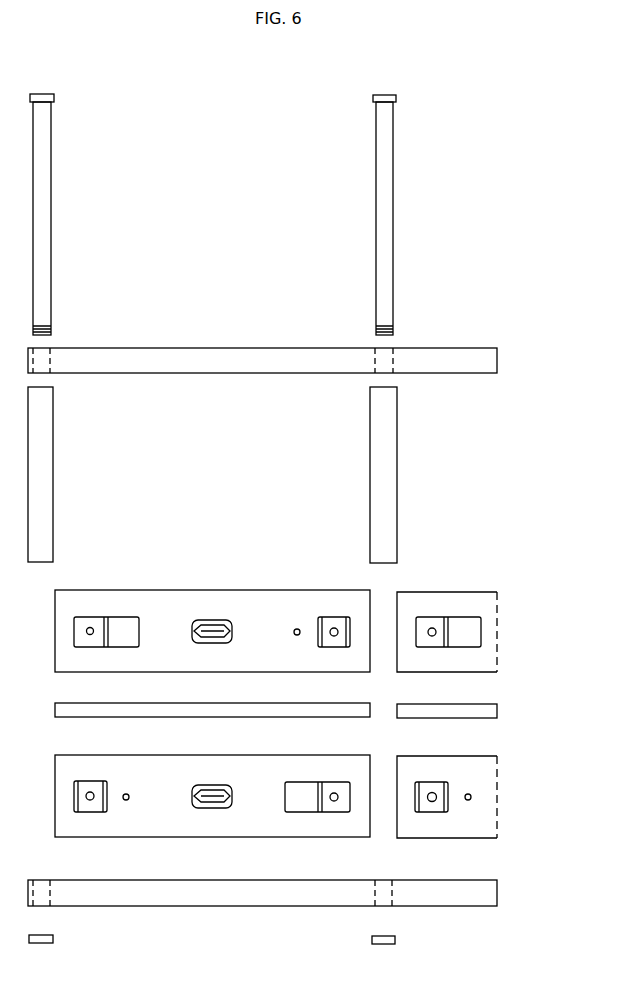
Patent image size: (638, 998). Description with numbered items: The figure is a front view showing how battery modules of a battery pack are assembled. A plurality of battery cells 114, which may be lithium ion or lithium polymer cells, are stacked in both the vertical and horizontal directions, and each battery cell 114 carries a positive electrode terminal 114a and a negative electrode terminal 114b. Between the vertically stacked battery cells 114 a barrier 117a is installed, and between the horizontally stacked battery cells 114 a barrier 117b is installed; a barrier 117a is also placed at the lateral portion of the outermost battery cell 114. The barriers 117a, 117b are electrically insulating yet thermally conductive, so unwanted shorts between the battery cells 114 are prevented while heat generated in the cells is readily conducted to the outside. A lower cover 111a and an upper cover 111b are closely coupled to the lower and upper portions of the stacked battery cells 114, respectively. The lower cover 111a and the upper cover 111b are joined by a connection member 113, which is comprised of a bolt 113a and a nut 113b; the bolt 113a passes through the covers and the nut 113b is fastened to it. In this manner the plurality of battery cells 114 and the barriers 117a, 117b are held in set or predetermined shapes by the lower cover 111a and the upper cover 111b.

The connection member 113 is at (416, 185).
The bolt 113a is at (388, 149).
The nut 113b is at (383, 950).
The lower cover 111a is at (490, 895).
The upper cover 111b is at (490, 365).
The barrier 117a is at (392, 482).
The barrier 117b is at (488, 710).
The battery cell 114 is at (212, 597).
The positive electrode terminal 114a is at (335, 622).
The negative electrode terminal 114b is at (91, 620).